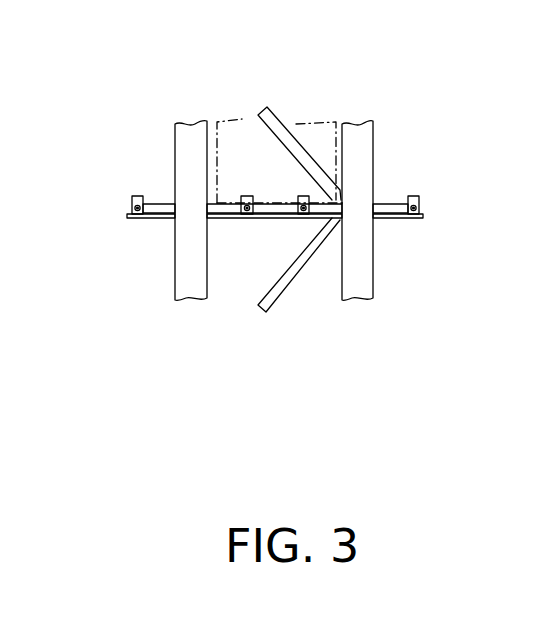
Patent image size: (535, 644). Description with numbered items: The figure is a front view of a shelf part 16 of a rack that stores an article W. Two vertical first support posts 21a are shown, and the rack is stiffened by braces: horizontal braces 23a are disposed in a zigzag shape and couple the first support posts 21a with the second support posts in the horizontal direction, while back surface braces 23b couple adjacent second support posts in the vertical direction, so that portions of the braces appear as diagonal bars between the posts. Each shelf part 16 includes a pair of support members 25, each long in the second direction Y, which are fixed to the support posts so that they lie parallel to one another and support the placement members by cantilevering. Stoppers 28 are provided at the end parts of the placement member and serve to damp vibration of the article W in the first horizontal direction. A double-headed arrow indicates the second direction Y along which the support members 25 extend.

The article W is at (240, 120).
The shelf part 16 is at (236, 192).
The first support posts 21a is at (197, 248).
The horizontal braces 23a is at (275, 220).
The back surface braces 23b is at (292, 124).
The support members 25 is at (222, 208).
The stoppers 28 is at (132, 199).
The second direction Y is at (313, 405).